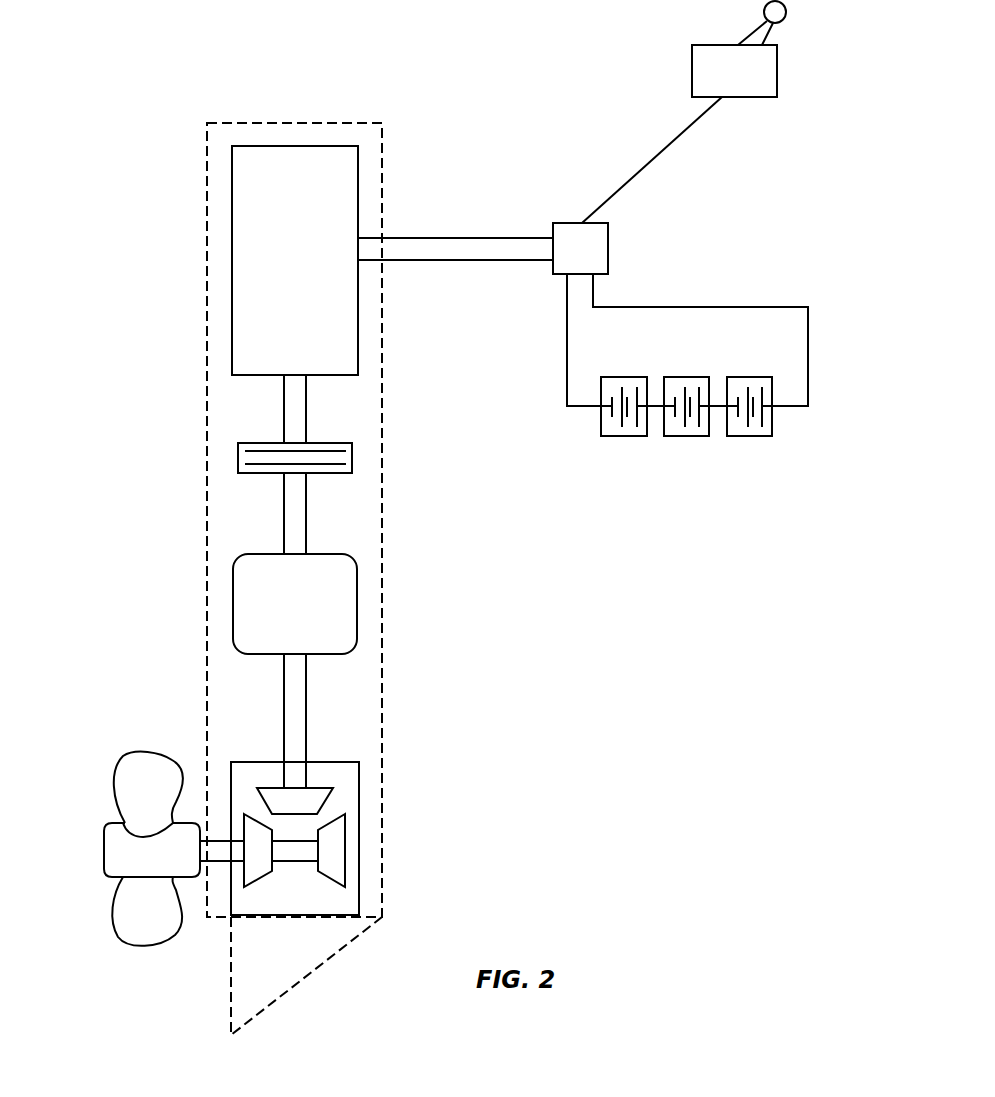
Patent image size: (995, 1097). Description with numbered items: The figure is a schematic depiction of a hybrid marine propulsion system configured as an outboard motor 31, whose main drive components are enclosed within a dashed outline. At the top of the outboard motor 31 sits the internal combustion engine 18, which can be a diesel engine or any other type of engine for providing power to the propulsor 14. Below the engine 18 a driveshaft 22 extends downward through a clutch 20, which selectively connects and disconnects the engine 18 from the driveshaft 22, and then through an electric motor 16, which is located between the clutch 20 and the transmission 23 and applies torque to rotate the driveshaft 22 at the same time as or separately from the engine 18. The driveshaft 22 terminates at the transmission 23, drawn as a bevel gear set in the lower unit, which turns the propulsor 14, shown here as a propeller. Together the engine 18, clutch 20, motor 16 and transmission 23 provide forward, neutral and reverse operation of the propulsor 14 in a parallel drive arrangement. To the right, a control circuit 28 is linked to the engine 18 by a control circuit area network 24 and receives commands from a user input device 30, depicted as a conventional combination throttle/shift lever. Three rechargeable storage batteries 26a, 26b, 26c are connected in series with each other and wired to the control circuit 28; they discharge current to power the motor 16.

The propulsor 14 is at (115, 852).
The electric motor 16 is at (233, 598).
The internal combustion engine 18 is at (232, 287).
The clutch 20 is at (238, 455).
The driveshaft 22 is at (306, 702).
The transmission 23 is at (338, 900).
The control circuit area network 24 is at (422, 238).
The rechargeable storage battery 26a is at (620, 436).
The rechargeable storage battery 26b is at (684, 436).
The rechargeable storage battery 26c is at (752, 436).
The control circuit 28 is at (608, 252).
The user input device 30 is at (777, 70).
The outboard motor 31 is at (382, 517).